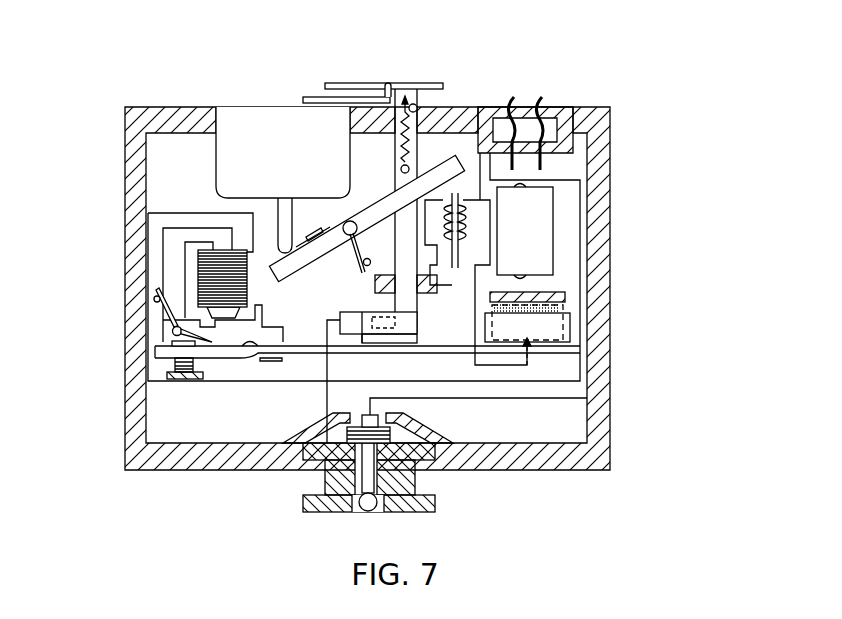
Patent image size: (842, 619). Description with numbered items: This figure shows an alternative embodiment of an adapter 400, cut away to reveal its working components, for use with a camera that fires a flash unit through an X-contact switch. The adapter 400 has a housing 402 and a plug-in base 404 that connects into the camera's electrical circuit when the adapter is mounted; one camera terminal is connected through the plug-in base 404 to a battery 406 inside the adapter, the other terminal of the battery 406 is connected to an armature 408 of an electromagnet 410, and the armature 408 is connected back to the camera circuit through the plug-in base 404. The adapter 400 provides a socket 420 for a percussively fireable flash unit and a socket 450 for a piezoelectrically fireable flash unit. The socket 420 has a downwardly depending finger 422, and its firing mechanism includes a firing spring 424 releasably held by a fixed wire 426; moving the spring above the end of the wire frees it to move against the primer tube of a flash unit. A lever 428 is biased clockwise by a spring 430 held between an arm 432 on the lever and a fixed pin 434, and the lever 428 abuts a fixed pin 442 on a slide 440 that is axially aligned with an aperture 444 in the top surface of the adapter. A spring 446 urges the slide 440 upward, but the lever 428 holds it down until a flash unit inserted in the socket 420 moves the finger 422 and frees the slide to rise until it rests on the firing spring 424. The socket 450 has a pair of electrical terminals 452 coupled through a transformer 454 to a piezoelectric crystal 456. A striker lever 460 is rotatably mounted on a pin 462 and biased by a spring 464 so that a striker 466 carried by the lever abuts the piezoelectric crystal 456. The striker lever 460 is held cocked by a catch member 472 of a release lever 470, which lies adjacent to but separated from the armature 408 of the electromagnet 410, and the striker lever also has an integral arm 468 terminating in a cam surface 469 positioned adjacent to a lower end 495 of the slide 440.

The adapter 400 is at (550, 489).
The housing 402 is at (600, 418).
The plug-in base 404 is at (312, 513).
The battery 406 is at (540, 243).
The armature 408 is at (222, 302).
The electromagnet 410 is at (194, 282).
The socket 420 is at (263, 120).
The finger 422 is at (282, 196).
The firing spring 424 is at (372, 85).
The fixed wire 426 is at (388, 83).
The lever 428 is at (462, 148).
The spring 430 is at (325, 228).
The arm 432 is at (315, 243).
The fixed pin 434 is at (362, 273).
The slide 440 is at (412, 95).
The fixed pin 442 is at (401, 171).
The aperture 444 is at (420, 108).
The spring 446 is at (403, 133).
The socket 450 is at (558, 107).
The electrical terminals 452 is at (515, 100).
The transformer 454 is at (480, 203).
The piezoelectric crystal 456 is at (560, 305).
The striker lever 460 is at (565, 347).
The pin 462 is at (178, 380).
The spring 464 is at (172, 364).
The striker 466 is at (568, 333).
The integral arm 468 is at (348, 340).
The cam surface 469 is at (380, 322).
The release lever 470 is at (170, 327).
The catch member 472 is at (265, 335).
The lower end 495 is at (398, 343).